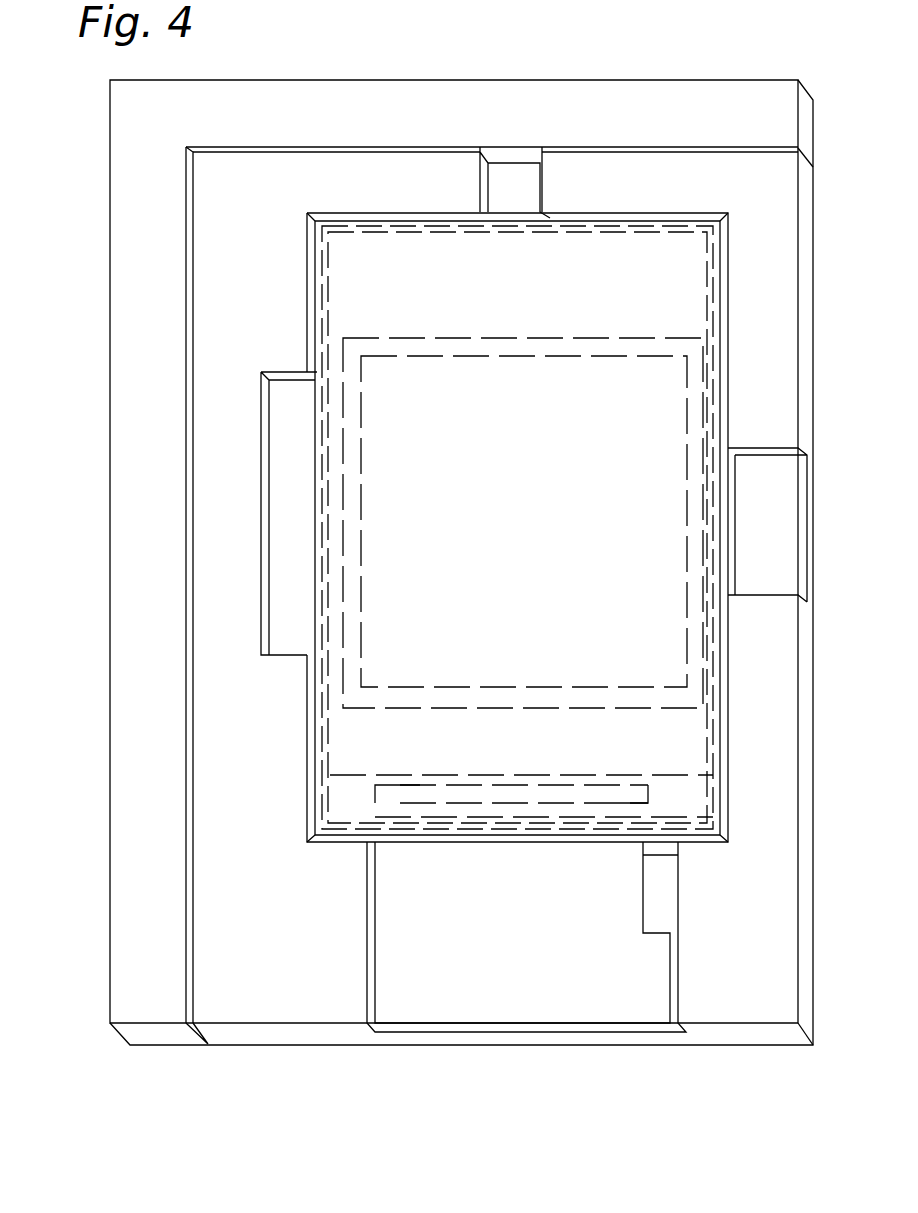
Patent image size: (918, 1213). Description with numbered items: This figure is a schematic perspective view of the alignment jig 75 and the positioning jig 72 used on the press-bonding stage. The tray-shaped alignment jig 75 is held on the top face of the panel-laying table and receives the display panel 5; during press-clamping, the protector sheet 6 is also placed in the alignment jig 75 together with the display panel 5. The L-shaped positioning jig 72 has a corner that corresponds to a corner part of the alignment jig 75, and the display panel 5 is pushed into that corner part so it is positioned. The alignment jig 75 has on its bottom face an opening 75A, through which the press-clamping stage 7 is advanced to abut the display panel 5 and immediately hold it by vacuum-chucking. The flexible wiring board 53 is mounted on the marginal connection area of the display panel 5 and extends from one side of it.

The positioning jig 72 is at (140, 155).
The alignment jig 75 is at (215, 224).
The protector sheet 6 is at (362, 305).
The display panel 5 is at (325, 458).
The press-clamping stage 7 is at (420, 653).
The opening 75A is at (400, 712).
The flexible wiring board 53 is at (455, 918).